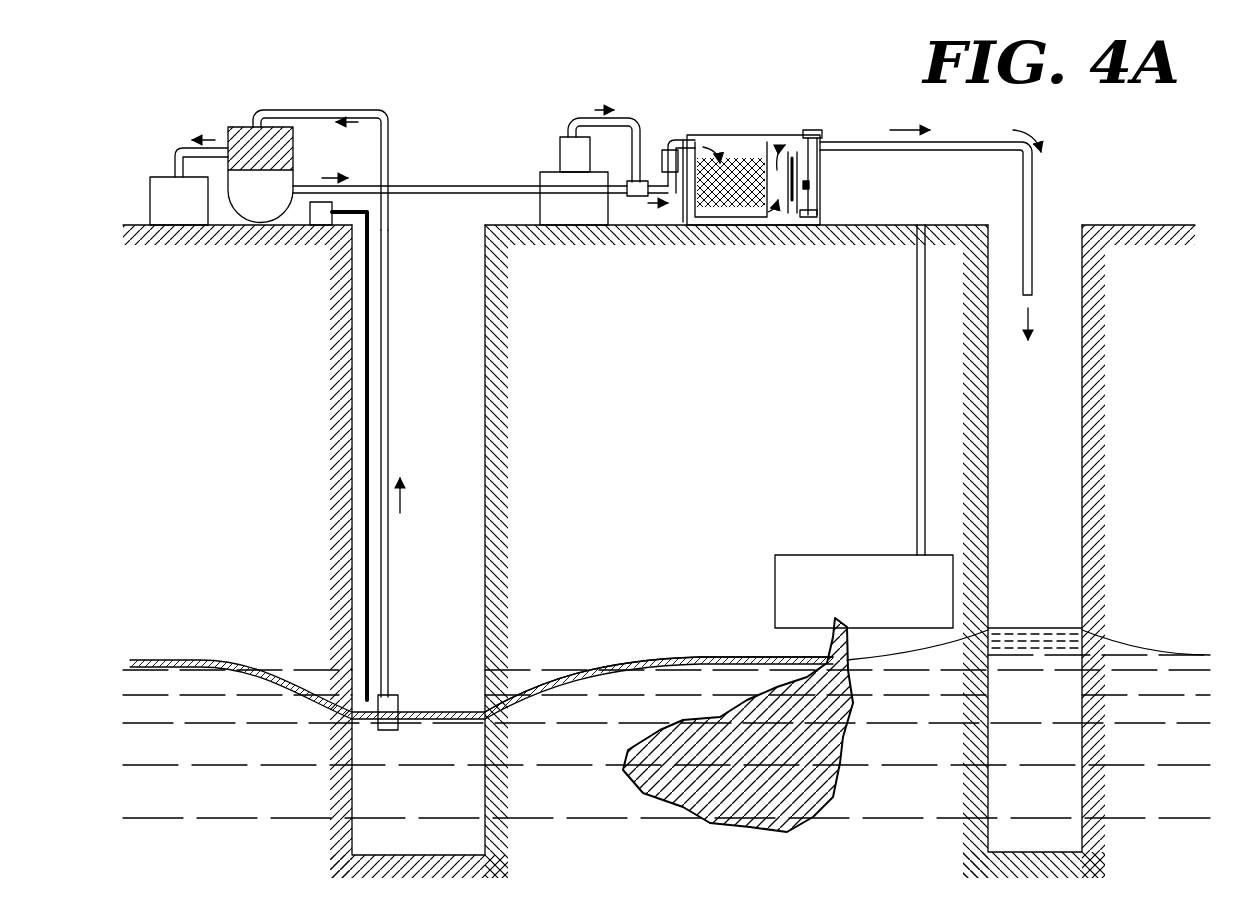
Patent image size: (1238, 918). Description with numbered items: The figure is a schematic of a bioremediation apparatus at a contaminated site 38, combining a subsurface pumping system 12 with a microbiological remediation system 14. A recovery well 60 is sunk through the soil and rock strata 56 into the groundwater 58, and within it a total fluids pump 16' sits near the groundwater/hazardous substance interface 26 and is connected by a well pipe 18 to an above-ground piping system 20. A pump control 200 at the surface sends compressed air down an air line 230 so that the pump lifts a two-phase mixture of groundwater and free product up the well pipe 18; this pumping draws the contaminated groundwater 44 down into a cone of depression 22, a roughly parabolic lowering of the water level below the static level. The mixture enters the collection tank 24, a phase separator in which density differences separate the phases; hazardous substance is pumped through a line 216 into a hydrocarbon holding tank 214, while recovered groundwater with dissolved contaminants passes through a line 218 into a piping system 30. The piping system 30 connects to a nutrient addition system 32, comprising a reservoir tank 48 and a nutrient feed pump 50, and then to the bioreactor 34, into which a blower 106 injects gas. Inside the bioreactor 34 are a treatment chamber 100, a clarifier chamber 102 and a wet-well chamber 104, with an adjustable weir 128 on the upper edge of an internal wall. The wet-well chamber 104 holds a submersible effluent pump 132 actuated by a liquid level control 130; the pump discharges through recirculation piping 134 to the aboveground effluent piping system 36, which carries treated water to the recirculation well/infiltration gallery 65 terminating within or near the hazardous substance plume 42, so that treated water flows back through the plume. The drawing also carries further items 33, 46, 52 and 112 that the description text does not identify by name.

The subsurface pumping system 12 is at (216, 101).
The microbiological treatment apparatus 14 is at (842, 132).
The total fluids pump 16' is at (407, 725).
The well pipe 18 is at (380, 528).
The above-ground piping system 20 is at (318, 110).
The cone of depression 22 is at (534, 670).
The collection tank 24 is at (262, 216).
The groundwater/hazardous substance interface 26 is at (200, 669).
The piping system 30 is at (528, 194).
The nutrient addition system 32 is at (551, 128).
The fitting 33 is at (636, 197).
The bioreactor 34 is at (753, 114).
The aboveground effluent piping system 36 is at (972, 151).
The contaminated site 38 is at (870, 650).
The hazardous substance plume 42 is at (645, 735).
The contaminated groundwater 44 is at (534, 748).
The liner 46 is at (175, 660).
The reservoir tank 48 is at (586, 218).
The nutrient feed pump 50 is at (587, 164).
The discharge pipe 52 is at (628, 118).
The soil and rock strata 56 is at (1172, 364).
The groundwater 58 is at (211, 803).
The recovery well 60 is at (447, 631).
The recirculation well/infiltration gallery 65 is at (1044, 446).
The treatment chamber 100 is at (733, 145).
The clarifier chamber 102 is at (778, 152).
The wet-well chamber 104 is at (792, 207).
The blower 106 is at (715, 160).
The filter media basket 112 is at (730, 195).
The adjustable weir 128 is at (812, 130).
The liquid level control 130 is at (810, 186).
The submersible effluent pump 132 is at (818, 214).
The recirculation piping 134 is at (818, 158).
The pump control 200 is at (320, 220).
The hydrocarbon holding tank 214 is at (198, 209).
The line 216 is at (170, 155).
The line 218 is at (445, 186).
The air line 230 is at (363, 473).